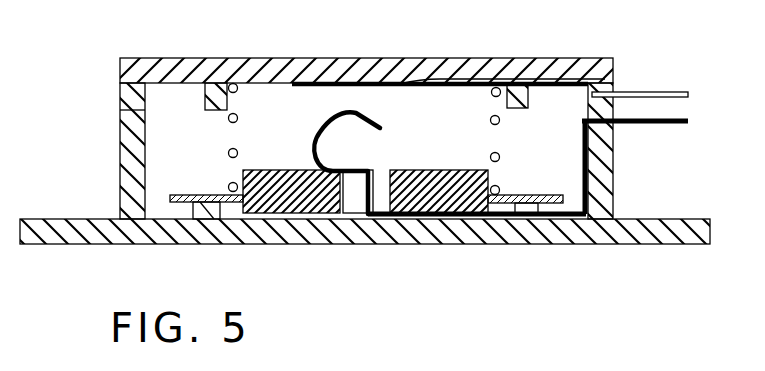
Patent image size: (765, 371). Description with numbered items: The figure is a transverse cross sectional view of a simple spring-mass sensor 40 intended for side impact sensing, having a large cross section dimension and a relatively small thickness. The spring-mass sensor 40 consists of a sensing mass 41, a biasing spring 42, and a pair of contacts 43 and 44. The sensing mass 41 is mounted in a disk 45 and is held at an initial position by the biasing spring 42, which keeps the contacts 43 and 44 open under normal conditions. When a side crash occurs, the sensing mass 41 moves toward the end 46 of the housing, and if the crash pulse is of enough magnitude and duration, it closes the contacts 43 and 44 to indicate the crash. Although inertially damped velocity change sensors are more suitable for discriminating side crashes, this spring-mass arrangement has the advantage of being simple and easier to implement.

The spring-mass sensor 40 is at (615, 163).
The sensing mass 41 is at (470, 222).
The biasing spring 42 is at (229, 153).
The contact 43 is at (333, 114).
The contact 44 is at (337, 58).
The disk 45 is at (558, 212).
The end of the housing 46 is at (556, 65).